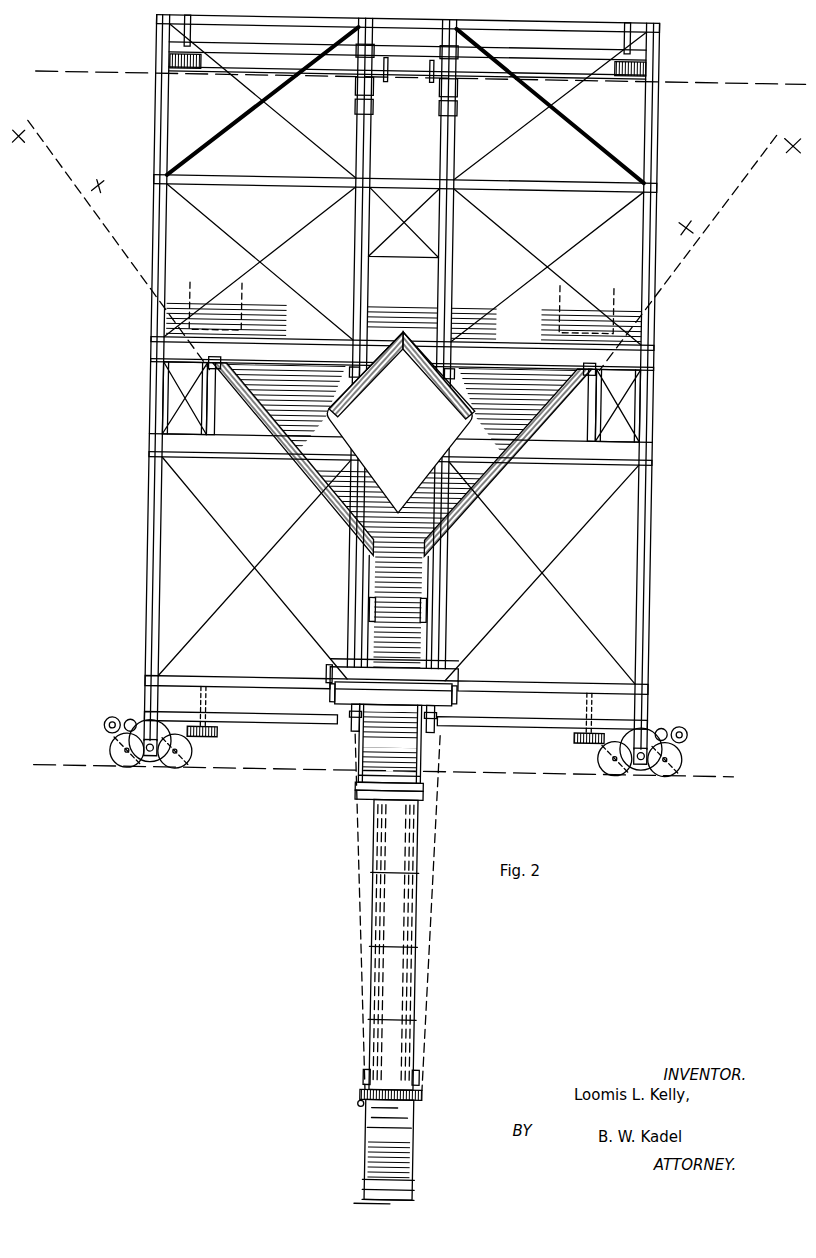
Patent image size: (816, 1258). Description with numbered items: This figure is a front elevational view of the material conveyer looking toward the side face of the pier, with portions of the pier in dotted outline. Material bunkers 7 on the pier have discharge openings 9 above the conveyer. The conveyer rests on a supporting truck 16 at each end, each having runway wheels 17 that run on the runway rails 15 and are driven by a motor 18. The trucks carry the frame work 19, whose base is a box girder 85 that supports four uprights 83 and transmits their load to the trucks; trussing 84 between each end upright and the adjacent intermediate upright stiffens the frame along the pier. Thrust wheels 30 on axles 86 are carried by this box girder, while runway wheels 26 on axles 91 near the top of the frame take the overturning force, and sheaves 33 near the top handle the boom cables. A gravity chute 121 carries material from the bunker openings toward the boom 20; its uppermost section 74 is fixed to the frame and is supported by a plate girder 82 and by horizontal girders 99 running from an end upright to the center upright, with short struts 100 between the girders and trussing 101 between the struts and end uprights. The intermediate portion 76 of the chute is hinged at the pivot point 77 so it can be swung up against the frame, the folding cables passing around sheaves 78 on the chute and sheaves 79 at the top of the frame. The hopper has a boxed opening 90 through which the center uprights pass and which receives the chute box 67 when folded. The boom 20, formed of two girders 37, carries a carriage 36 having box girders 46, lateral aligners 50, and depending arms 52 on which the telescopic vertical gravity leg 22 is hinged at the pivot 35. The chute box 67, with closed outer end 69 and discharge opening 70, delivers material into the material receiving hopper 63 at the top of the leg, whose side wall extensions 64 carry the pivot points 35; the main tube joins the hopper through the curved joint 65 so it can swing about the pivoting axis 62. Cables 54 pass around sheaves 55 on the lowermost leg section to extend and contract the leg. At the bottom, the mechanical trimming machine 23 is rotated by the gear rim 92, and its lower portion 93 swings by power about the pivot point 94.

The material bunkers 7 is at (405, 250).
The discharge openings 9 is at (210, 297).
The runway rails 15 is at (714, 770).
The supporting truck 16 is at (158, 762).
The runway wheels 17 is at (125, 765).
The motor 18 is at (115, 723).
The frame work 19 is at (653, 527).
The boom 20 is at (457, 700).
The telescopic vertical gravity leg 22 is at (425, 985).
The mechanical trimming machine 23 is at (410, 1128).
The runway wheels 26 is at (188, 74).
The thrust wheels 30 is at (219, 740).
The sheaves 33 is at (356, 88).
The pivot 35 is at (357, 725).
The carriage 36 is at (437, 656).
The boom girders 37 is at (337, 696).
The box girders 46 is at (463, 673).
The lateral aligners 50 is at (332, 680).
The depending arms 52 is at (355, 709).
The cables 54 is at (363, 827).
The sheave 55 is at (376, 1078).
The pivoting axis 62 is at (392, 792).
The material receiving hopper 63 is at (420, 759).
The side wall extensions 64 is at (365, 753).
The curved joint 65 is at (368, 798).
The chute box 67 is at (428, 740).
The closed outer end 69 is at (389, 743).
The discharge opening 70 is at (418, 771).
The upper chute section 74 is at (388, 359).
The intermediate chute portion 76 is at (380, 579).
The hinge pivot point 77 is at (226, 375).
The sheaves 78 is at (372, 603).
The sheaves 79 is at (382, 78).
The plate girder 82 is at (404, 321).
The uprights 83 is at (163, 552).
The trussing 84 is at (293, 84).
The box girder 85 is at (396, 703).
The axles 86 is at (208, 684).
The boxed opening 90 is at (400, 423).
The axles 91 is at (185, 35).
The gear rim 92 is at (434, 1097).
The lower portion 93 is at (414, 1190).
The pivot point 94 is at (370, 1105).
The horizontal girders 99 is at (574, 466).
The short struts 100 is at (211, 426).
The trussing 101 is at (395, 402).
The gravity chute 121 is at (380, 623).